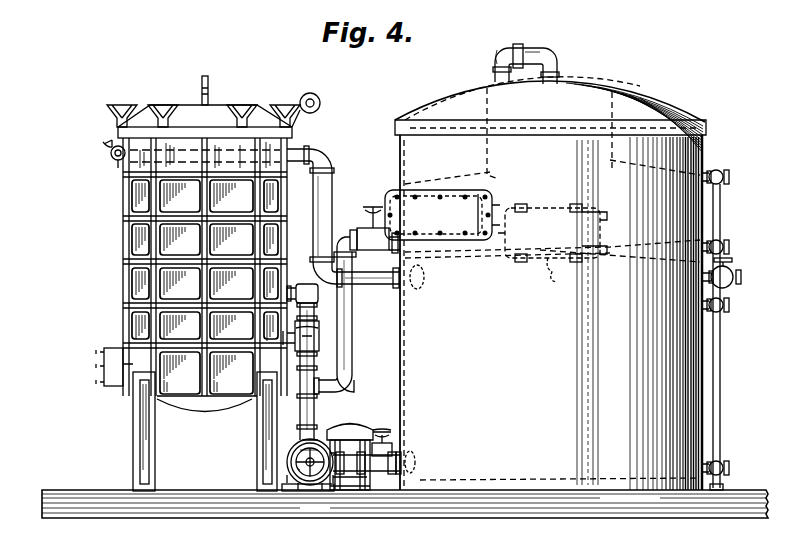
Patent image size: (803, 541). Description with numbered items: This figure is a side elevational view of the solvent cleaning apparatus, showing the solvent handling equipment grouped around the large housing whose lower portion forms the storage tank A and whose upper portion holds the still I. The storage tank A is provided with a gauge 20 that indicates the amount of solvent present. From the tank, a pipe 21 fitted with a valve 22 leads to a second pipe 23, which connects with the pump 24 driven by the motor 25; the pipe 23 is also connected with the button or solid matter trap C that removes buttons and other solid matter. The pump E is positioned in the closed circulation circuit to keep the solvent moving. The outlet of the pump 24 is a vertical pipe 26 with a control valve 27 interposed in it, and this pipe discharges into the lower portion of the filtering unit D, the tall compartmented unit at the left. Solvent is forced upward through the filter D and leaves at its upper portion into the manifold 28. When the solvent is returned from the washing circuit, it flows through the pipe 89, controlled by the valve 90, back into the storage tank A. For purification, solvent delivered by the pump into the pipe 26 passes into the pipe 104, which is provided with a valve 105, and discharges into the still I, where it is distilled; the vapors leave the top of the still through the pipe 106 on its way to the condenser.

The gauge 20 is at (722, 388).
The pipe 21 is at (406, 460).
The valve 22 is at (388, 444).
The second pipe 23 is at (350, 470).
The pump 24 is at (300, 456).
The motor 25 is at (297, 468).
The vertical pipe 26 is at (314, 420).
The control valve 27 is at (318, 338).
The manifold 28 is at (108, 154).
The pipe 89 is at (370, 286).
The valve 90 is at (190, 128).
The pipe 104 is at (350, 330).
The valve 105 is at (364, 232).
The pipe 106 is at (531, 47).
The storage tank A is at (545, 283).
The trap C is at (356, 440).
The filtering unit D is at (117, 289).
The pump E is at (285, 451).
The still I is at (540, 181).